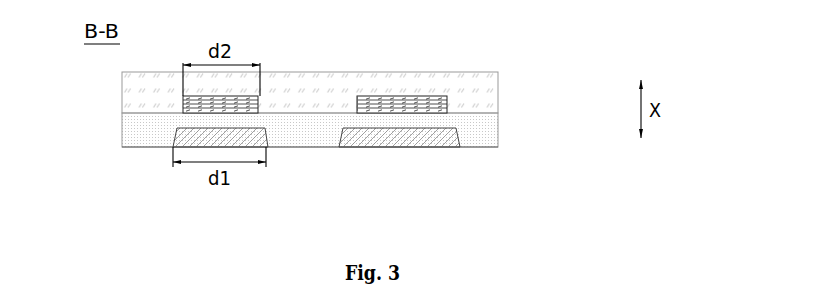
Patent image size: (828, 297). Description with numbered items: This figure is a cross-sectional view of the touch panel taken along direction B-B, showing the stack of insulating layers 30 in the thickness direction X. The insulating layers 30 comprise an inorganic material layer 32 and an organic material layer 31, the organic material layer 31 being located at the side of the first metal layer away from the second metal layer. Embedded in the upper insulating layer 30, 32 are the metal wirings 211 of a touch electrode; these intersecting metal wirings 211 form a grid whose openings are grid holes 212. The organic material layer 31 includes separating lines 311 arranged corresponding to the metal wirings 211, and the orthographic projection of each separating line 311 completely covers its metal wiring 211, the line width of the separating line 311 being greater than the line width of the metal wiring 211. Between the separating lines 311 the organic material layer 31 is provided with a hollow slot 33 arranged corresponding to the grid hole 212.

The insulating layer 30 is at (361, 124).
The inorganic material layer 32 is at (492, 87).
The organic material layer 31 is at (316, 184).
The separating line 311 is at (266, 147).
The metal wiring 211 is at (262, 97).
The grid hole 212 is at (348, 105).
The hollow slot 33 is at (273, 138).